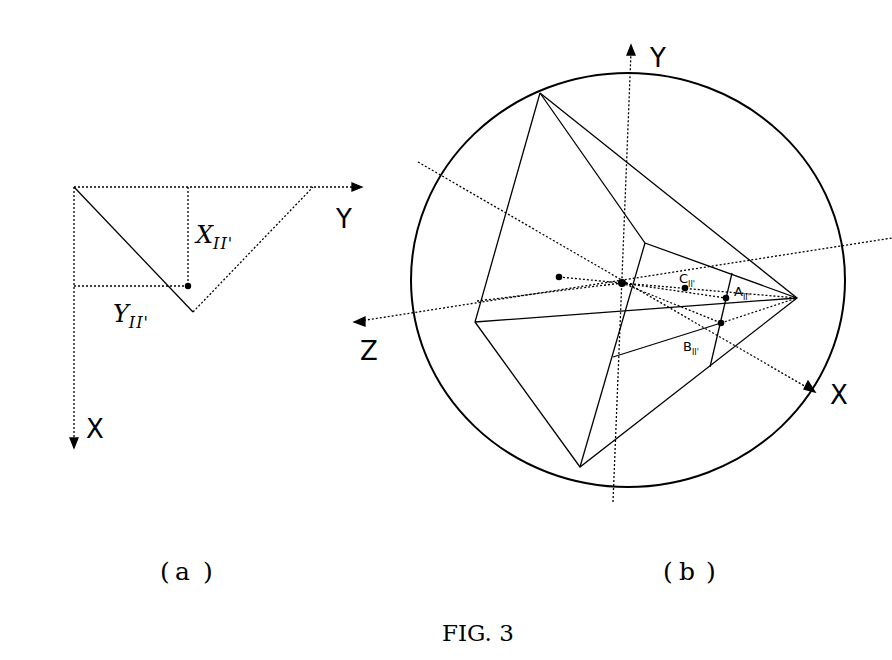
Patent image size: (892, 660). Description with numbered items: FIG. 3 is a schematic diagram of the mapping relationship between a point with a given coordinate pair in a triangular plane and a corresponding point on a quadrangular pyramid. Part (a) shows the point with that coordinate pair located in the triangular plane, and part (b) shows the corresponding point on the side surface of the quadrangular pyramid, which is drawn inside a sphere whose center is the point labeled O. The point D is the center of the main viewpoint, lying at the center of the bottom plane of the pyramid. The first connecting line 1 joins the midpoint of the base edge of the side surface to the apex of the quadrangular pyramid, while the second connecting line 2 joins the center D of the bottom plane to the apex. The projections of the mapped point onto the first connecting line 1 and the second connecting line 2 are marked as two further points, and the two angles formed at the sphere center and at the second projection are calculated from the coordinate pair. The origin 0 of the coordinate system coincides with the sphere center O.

The origin O of the coordinate system 0 is at (616, 273).
The connecting line n1 1 is at (667, 347).
The connecting line n2 2 is at (579, 278).